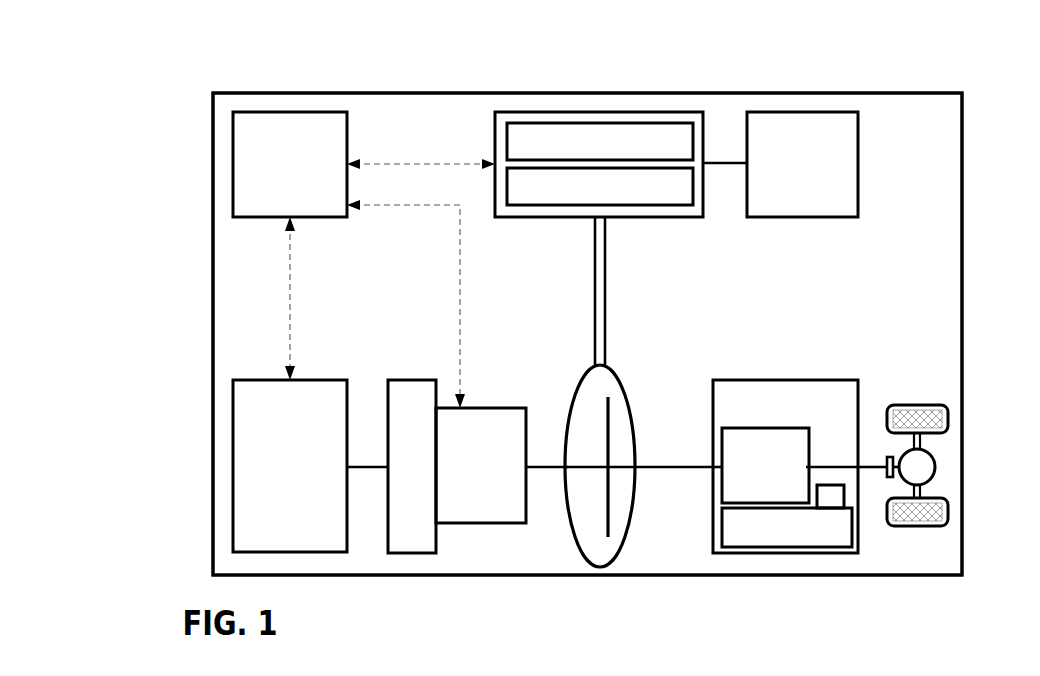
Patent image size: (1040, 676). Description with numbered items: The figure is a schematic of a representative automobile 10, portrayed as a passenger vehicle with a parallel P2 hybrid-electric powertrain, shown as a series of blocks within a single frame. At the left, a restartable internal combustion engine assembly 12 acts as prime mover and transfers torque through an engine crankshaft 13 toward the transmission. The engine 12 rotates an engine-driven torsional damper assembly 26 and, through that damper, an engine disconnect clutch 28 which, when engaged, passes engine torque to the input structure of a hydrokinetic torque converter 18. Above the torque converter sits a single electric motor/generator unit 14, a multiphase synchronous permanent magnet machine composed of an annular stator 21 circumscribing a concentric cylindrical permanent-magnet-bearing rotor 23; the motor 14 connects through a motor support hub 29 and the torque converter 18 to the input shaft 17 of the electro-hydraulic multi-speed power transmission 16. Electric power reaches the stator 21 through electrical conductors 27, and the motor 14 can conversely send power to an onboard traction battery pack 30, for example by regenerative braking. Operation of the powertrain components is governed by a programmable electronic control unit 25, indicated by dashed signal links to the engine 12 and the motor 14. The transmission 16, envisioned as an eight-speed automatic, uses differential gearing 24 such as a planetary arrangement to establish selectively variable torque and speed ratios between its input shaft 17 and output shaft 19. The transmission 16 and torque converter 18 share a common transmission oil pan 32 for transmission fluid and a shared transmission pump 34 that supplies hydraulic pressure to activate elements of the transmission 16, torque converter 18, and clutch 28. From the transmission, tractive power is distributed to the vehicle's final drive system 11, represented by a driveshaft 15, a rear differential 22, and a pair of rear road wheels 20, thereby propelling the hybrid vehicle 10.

The automobile 10 is at (207, 76).
The final drive system 11 is at (939, 292).
The internal combustion engine assembly 12 is at (248, 380).
The engine crankshaft 13 is at (366, 465).
The electric motor/generator unit 14 is at (514, 112).
The driveshaft 15 is at (876, 465).
The multi-speed power transmission 16 is at (730, 380).
The input shaft 17 is at (668, 465).
The hydrokinetic torque converter 18 is at (630, 522).
The output shaft 19 is at (541, 465).
The road wheels 20 is at (913, 405).
The annular stator 21 is at (507, 129).
The rear differential 22 is at (935, 462).
The permanent-magnet-bearing rotor 23 is at (507, 180).
The differential gearing 24 is at (771, 428).
The programmable electronic control unit 25 is at (246, 112).
The torsional damper assembly 26 is at (432, 380).
The electrical conductors 27 is at (718, 160).
The engine disconnect clutch 28 is at (500, 408).
The motor support hub 29 is at (595, 246).
The traction battery pack 30 is at (777, 112).
The transmission oil pan 32 is at (763, 528).
The transmission pump 34 is at (825, 498).